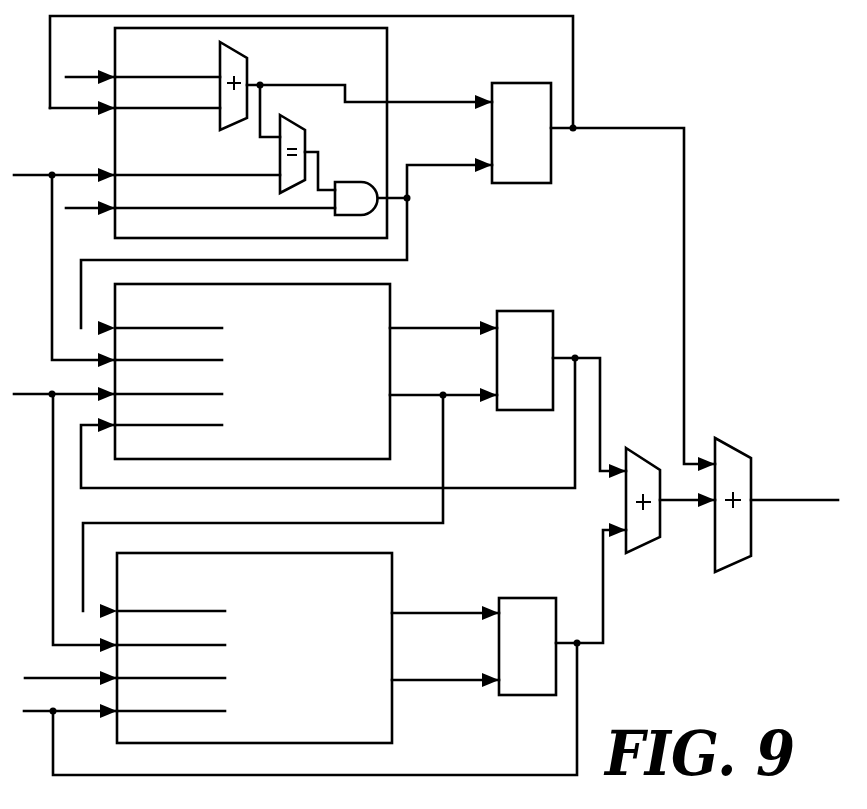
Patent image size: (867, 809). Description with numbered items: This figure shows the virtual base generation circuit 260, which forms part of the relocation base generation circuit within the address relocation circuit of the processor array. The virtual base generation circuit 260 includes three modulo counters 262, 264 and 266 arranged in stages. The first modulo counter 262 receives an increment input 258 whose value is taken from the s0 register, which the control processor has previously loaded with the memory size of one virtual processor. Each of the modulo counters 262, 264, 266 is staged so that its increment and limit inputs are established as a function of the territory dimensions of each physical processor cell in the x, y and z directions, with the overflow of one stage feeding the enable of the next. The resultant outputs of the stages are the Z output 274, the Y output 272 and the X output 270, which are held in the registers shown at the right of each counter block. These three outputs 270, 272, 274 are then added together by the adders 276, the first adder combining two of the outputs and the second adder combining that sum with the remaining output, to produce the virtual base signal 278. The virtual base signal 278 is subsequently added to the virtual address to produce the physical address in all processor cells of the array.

The step input (SO) and z base input to z counter 258 is at (91, 76).
The virtual base generation circuit 260 is at (716, 46).
The first modulo counter 262 is at (388, 236).
The modulo counter 264 is at (390, 292).
The modulo counter 266 is at (392, 565).
The output X 270 is at (603, 643).
The output Y 272 is at (590, 358).
The output Z 274 is at (619, 128).
The adders 276 is at (650, 543).
The virtual base signal 278 is at (768, 502).